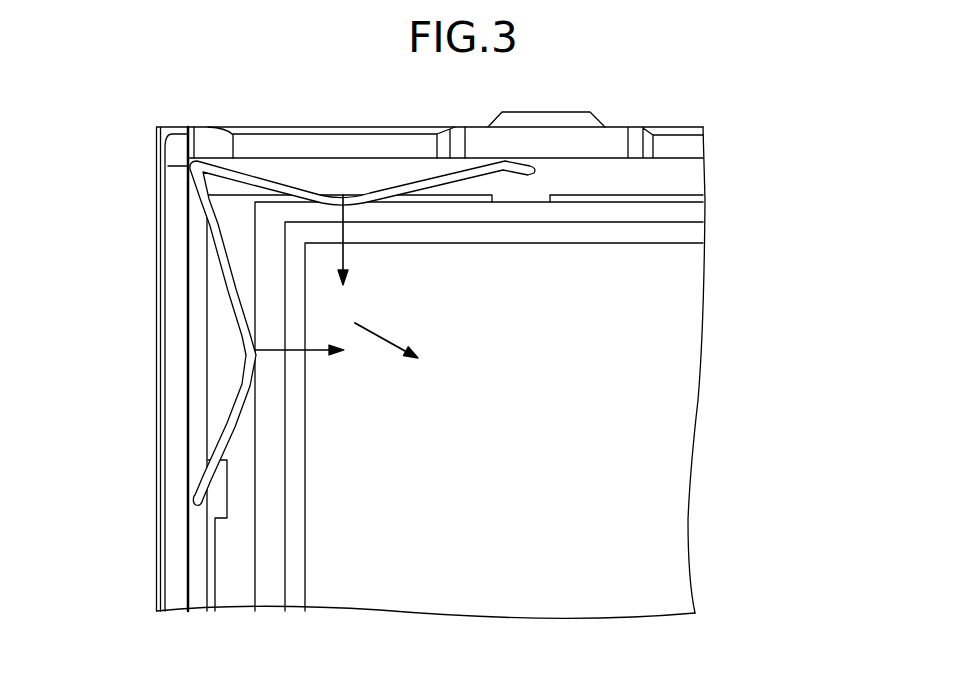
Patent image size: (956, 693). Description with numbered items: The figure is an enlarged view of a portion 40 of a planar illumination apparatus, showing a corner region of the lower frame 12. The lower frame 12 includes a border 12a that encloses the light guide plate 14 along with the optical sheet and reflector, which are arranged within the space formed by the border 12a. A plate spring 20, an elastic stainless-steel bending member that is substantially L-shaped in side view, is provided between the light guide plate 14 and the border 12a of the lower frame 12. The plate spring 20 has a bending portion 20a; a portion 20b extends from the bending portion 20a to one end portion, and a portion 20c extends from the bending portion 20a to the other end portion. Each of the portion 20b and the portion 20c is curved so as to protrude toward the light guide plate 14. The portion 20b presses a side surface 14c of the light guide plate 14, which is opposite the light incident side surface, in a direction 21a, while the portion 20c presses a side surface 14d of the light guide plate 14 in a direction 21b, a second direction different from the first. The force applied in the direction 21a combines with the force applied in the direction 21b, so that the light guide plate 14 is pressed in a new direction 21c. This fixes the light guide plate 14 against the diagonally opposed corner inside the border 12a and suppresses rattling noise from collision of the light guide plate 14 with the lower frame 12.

The portion 40 is at (726, 128).
The lower frame 12 is at (619, 172).
The border 12a is at (404, 145).
The light guide plate 14 is at (418, 600).
The side surface 14c is at (535, 196).
The side surface 14d is at (240, 553).
The plate spring 20 is at (238, 174).
The bending portion 20a is at (197, 158).
The portion 20b is at (281, 185).
The portion 20c is at (225, 276).
The direction 21a is at (350, 258).
The direction 21b is at (316, 353).
The direction 21c is at (380, 336).